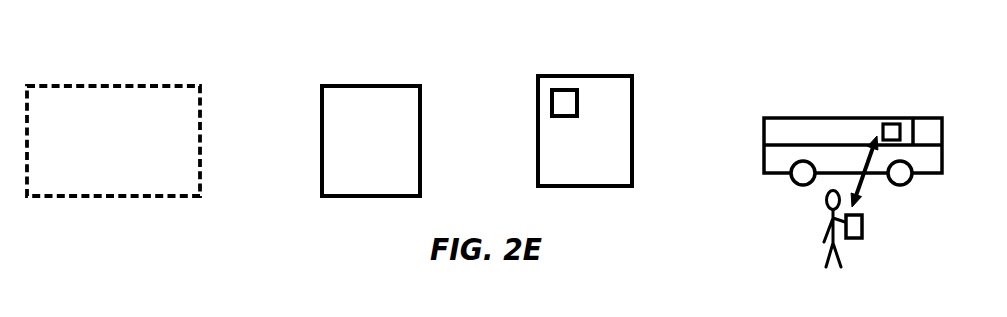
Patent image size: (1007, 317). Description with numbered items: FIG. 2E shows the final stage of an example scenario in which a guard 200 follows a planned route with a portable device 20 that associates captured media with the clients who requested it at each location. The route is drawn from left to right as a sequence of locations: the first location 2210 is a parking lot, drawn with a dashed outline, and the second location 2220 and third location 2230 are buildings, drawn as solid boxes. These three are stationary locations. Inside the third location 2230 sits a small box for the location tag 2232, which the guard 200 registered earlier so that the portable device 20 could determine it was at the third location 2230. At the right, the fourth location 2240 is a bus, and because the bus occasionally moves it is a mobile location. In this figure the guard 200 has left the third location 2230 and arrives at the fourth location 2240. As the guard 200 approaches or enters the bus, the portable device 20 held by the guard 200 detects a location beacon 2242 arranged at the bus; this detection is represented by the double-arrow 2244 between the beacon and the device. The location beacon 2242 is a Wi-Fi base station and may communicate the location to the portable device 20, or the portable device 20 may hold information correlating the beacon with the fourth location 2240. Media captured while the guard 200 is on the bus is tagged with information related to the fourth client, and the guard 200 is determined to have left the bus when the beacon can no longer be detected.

The first location 2210 is at (161, 123).
The second location 2220 is at (334, 134).
The third location 2230 is at (547, 123).
The location tag 2232 is at (562, 96).
The fourth location 2240 is at (780, 150).
The location beacon 2242 is at (885, 126).
The double-arrow 2244 is at (851, 186).
The guard 200 is at (825, 228).
The portable device 20 is at (866, 238).